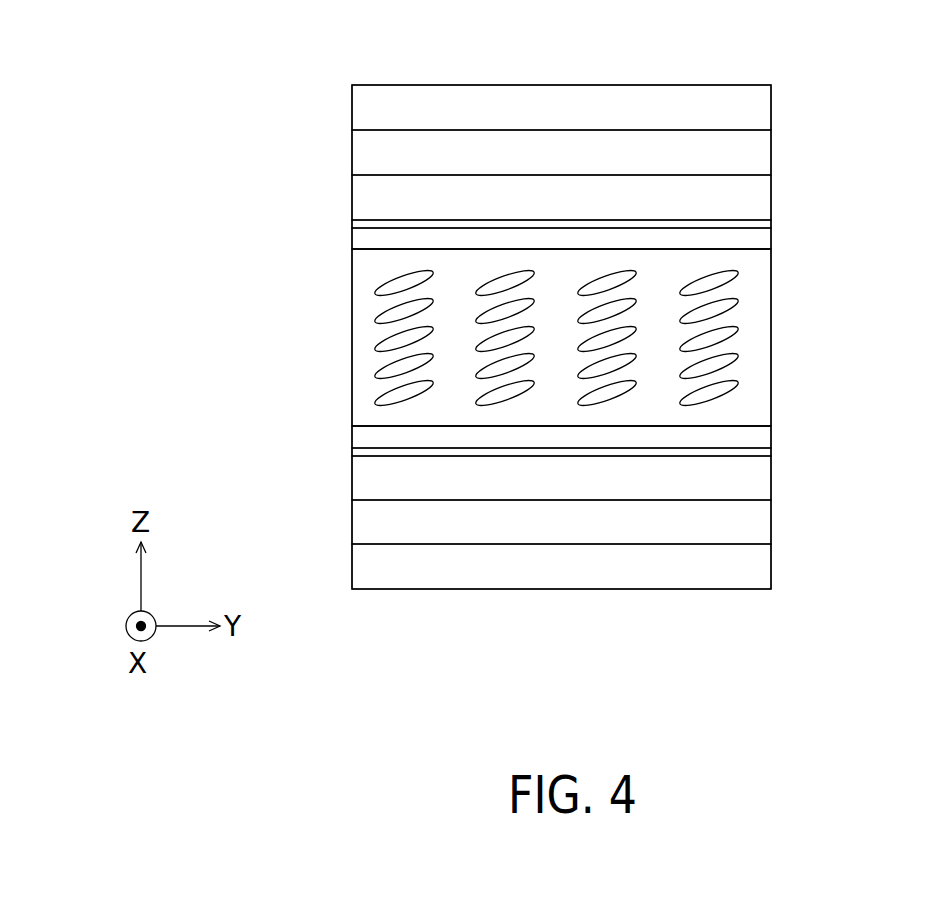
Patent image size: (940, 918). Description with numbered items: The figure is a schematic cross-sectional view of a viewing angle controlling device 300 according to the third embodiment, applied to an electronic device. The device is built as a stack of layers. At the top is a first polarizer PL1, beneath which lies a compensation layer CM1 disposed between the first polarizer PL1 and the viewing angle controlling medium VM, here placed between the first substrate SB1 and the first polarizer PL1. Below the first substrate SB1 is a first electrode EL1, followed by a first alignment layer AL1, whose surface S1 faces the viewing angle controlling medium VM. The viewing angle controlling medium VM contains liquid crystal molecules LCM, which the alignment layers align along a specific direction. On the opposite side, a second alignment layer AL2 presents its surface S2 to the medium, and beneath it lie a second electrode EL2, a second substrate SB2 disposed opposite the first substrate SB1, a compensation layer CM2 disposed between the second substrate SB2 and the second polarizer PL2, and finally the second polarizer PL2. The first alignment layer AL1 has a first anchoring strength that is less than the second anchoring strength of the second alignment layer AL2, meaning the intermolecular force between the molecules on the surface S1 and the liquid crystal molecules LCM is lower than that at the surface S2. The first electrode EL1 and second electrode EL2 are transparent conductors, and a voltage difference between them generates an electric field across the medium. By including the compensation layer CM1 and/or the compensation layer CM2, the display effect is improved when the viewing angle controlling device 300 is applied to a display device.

The viewing angle controlling device 300 is at (321, 106).
The first polarizer PL1 is at (765, 107).
The compensation layer CM1 is at (765, 152).
The first substrate SB1 is at (765, 190).
The first electrode EL1 is at (765, 225).
The first alignment layer AL1 is at (765, 238).
The surface S1 is at (758, 250).
The viewing angle controlling medium VM is at (750, 276).
The liquid crystal molecules LCM is at (613, 337).
The surface S2 is at (758, 426).
The second alignment layer AL2 is at (765, 437).
The second electrode EL2 is at (765, 450).
The second substrate SB2 is at (765, 485).
The compensation layer CM2 is at (765, 523).
The second polarizer PL2 is at (765, 567).